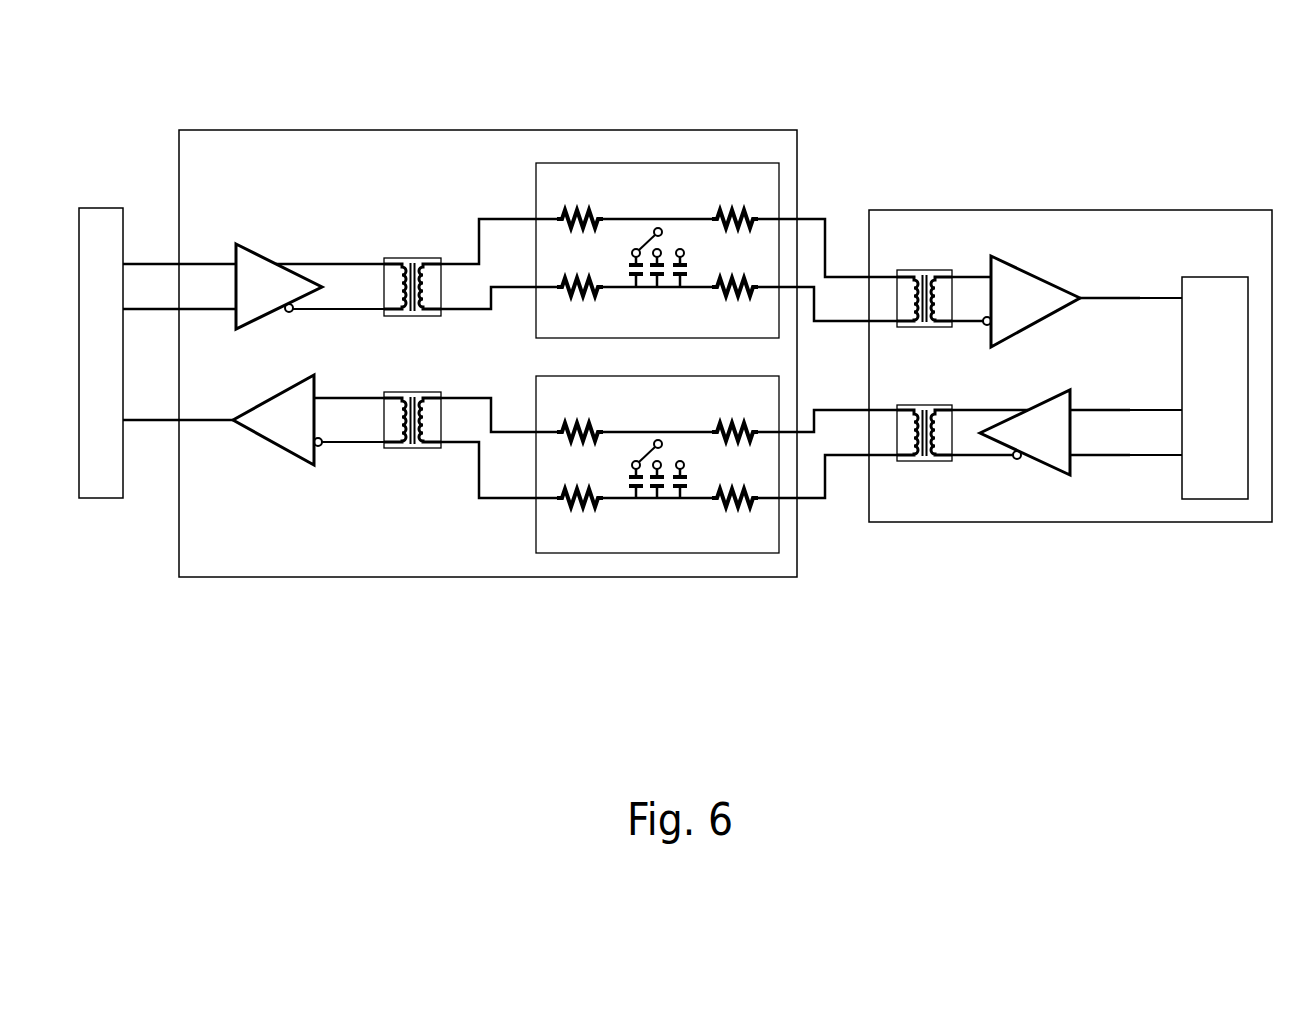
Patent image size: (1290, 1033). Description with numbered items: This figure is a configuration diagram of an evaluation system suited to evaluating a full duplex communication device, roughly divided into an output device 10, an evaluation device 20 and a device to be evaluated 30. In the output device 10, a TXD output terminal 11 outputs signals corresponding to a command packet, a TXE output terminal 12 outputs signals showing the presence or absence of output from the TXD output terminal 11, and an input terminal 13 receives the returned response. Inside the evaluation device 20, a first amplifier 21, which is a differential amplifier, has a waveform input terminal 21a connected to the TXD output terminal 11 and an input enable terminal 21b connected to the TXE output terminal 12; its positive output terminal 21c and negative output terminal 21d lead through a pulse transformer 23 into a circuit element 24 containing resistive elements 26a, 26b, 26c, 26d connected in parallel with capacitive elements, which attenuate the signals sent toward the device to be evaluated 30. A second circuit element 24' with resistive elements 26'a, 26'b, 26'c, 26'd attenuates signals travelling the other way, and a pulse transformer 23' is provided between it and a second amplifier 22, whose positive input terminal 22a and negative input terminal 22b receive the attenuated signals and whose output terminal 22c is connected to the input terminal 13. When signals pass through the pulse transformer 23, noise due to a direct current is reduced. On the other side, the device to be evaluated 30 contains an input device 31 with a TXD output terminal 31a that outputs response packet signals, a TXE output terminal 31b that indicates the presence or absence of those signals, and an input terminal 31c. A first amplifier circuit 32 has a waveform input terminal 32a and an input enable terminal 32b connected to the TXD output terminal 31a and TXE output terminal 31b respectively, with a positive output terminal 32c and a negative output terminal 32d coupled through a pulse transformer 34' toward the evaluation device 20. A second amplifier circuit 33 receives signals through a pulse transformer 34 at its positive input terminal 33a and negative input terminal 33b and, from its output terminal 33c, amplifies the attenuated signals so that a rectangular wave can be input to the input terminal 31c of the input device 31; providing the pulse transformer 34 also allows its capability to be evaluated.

The output device 10 is at (107, 201).
The TXD output terminal 11 is at (134, 264).
The TXE output terminal 12 is at (134, 309).
The input terminal 13 is at (134, 420).
The evaluation device 20 is at (545, 124).
The first amplifier 21 is at (279, 286).
The waveform input terminal 21a is at (221, 260).
The input enable terminal 21b is at (223, 314).
The positive output terminal 21c is at (285, 260).
The negative output terminal 21d is at (287, 314).
The second amplifier 22 is at (273, 420).
The positive input terminal 22a is at (324, 386).
The negative input terminal 22b is at (322, 450).
The output terminal 22c is at (225, 407).
The pulse transformer 23 is at (412, 262).
The pulse transformer 23' is at (412, 397).
The circuit element 24 is at (654, 234).
The circuit element 24' is at (651, 449).
The resistive element 26a is at (584, 205).
The resistive element 26b is at (584, 300).
The resistive element 26c is at (739, 205).
The resistive element 26d is at (737, 300).
The resistance 26'a is at (580, 411).
The resistor 26'b is at (580, 520).
The resistor 26'c is at (735, 411).
The resistance 26'd is at (735, 520).
The device to be evaluated 30 is at (1090, 199).
The input device 31 is at (1225, 267).
The TXD output terminal 31a is at (1172, 410).
The TXE output terminal 31b is at (1172, 455).
The input terminal 31c is at (1178, 298).
The first amplifier circuit 32 is at (1025, 432).
The waveform input terminal 32a is at (1080, 402).
The input enable terminal 32b is at (1080, 460).
The positive output terminal 32c is at (1024, 402).
The negative output terminal 32d is at (1012, 461).
The second amplifier circuit 33 is at (1035, 301).
The positive input terminal 33a is at (980, 267).
The negative input terminal 33b is at (983, 328).
The output terminal 33c is at (1084, 295).
The pulse transformer 34 is at (924, 275).
The transformer 34' is at (924, 408).